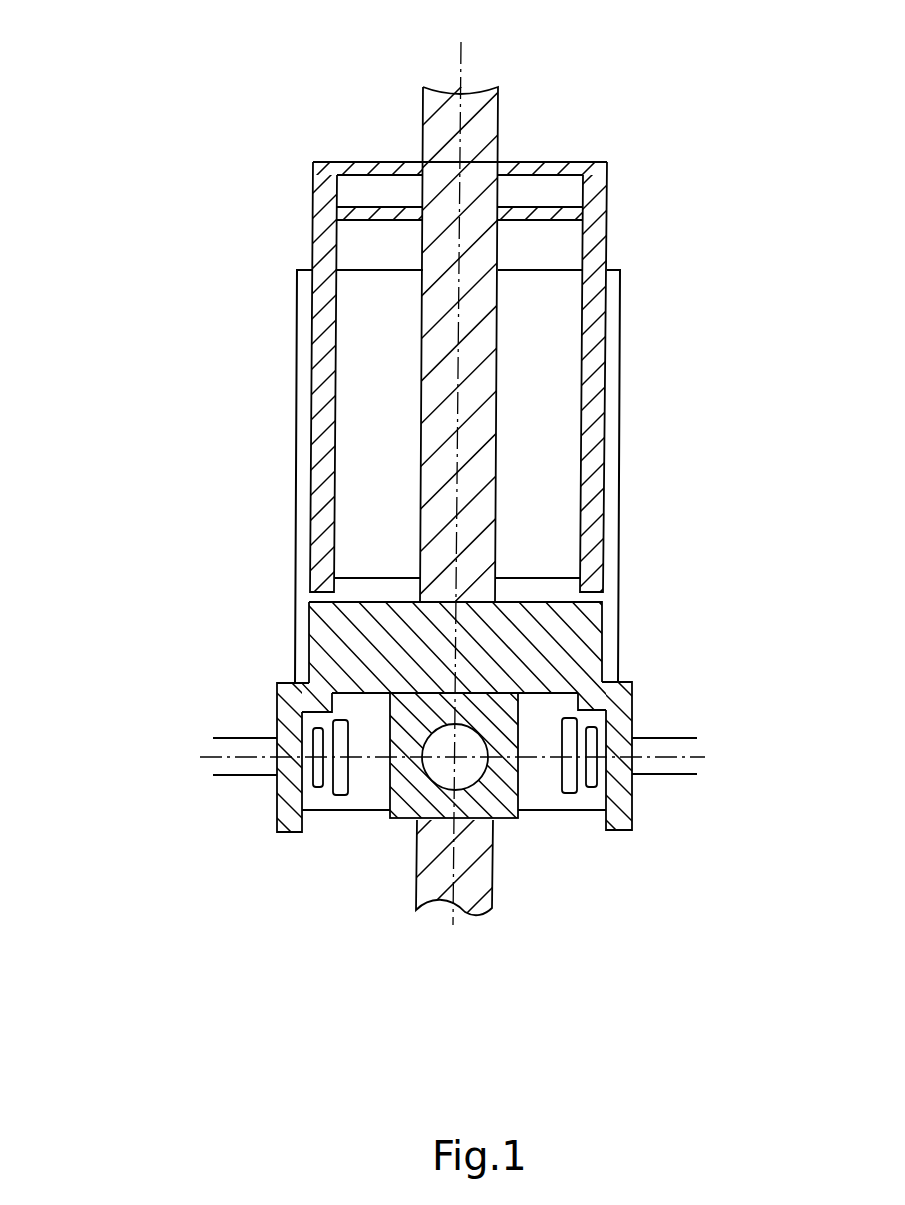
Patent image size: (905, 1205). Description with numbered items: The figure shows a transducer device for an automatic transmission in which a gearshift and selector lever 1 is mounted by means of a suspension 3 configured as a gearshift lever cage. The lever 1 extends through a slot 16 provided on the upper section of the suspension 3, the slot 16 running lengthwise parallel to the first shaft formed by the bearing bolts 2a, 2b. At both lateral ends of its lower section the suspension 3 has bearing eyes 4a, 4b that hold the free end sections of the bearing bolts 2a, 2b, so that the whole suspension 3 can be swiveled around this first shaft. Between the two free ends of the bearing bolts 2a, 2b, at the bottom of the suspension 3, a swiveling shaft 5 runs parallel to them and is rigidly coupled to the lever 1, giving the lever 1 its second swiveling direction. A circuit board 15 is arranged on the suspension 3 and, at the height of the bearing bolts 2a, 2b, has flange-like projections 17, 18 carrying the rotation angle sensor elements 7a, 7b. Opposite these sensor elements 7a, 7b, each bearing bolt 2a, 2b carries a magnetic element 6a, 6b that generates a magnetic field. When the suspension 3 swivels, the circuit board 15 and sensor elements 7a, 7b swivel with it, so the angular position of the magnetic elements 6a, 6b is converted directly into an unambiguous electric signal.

The gearshift and selector lever 1 is at (506, 524).
The slot 16 is at (516, 372).
The circuit board 15 is at (526, 476).
The suspension 3 is at (429, 602).
The rotation angle sensor element 7a is at (665, 744).
The rotation angle sensor element 7b is at (242, 743).
The swiveling shaft 5 is at (473, 855).
The magnetic element 6a is at (635, 880).
The magnetic element 6b is at (268, 879).
The flange-like projection 17 is at (365, 875).
The flange-like projection 18 is at (537, 874).
The bearing eye 4a is at (687, 931).
The bearing eye 4b is at (215, 931).
The bearing bolt 2a is at (742, 886).
The bearing bolt 2b is at (157, 884).